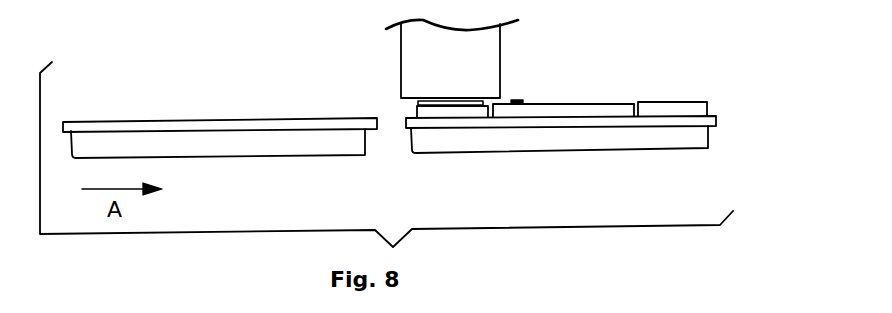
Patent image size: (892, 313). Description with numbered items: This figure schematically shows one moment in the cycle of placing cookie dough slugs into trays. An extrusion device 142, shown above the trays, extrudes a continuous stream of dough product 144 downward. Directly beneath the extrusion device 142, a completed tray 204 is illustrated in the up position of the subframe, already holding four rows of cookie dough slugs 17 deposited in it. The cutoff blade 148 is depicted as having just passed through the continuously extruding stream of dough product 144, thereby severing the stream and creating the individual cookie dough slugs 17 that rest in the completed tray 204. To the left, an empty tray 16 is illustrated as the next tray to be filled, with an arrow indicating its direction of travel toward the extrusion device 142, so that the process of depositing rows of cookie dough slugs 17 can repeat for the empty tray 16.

The tray 16 is at (254, 148).
The cookie dough slugs 17 is at (466, 108).
The extrusion device 142 is at (412, 46).
The dough product 144 is at (417, 103).
The cutoff blade 148 is at (520, 98).
The completed tray 204 is at (682, 145).